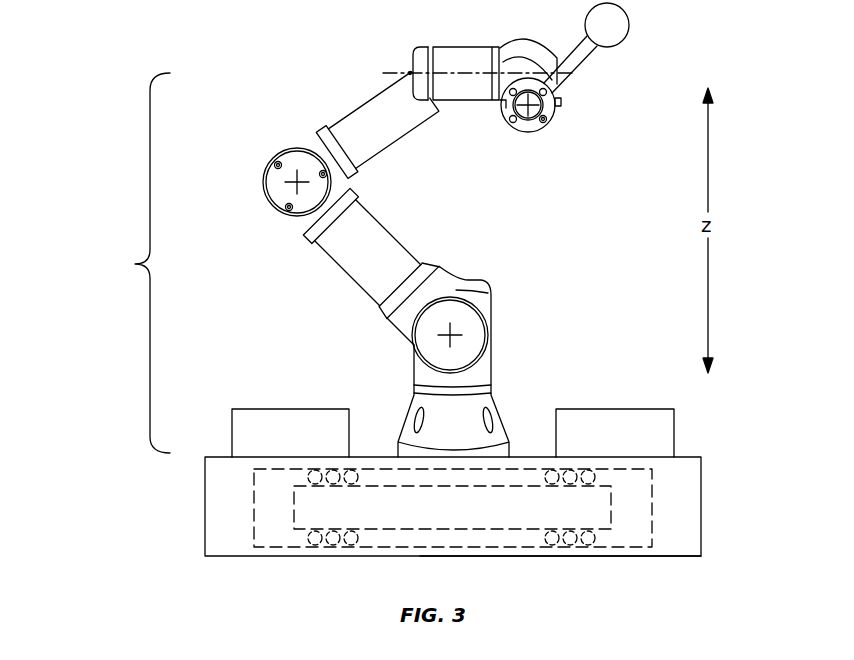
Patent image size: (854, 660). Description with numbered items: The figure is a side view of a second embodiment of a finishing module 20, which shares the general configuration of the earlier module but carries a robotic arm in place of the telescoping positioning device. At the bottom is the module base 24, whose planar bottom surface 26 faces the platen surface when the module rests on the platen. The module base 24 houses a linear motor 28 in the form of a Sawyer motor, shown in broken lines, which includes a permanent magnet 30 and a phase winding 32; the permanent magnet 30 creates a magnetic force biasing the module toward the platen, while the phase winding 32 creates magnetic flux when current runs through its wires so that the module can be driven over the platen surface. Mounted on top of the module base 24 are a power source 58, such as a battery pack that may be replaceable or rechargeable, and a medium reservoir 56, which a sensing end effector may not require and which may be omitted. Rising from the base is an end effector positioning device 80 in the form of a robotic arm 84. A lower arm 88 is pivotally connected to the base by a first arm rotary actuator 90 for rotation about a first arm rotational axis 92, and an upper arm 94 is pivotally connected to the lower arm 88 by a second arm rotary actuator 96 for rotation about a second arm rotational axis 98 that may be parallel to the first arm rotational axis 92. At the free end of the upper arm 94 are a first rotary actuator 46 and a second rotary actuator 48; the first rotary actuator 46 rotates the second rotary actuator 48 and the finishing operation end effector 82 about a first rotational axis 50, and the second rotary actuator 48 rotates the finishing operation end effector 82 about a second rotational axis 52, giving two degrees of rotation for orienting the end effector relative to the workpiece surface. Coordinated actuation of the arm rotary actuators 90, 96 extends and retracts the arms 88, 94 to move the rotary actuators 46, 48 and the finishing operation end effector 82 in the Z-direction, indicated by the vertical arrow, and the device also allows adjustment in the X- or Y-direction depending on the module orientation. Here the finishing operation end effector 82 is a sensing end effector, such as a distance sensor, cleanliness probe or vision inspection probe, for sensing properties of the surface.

The finishing module 20 is at (110, 86).
The module base 24 is at (205, 508).
The planar bottom surface 26 is at (581, 557).
The linear motor 28 is at (652, 497).
The permanent magnet 30 is at (611, 520).
The phase winding 32 is at (333, 545).
The first rotary actuator 46 is at (422, 50).
The second rotary actuator 48 is at (553, 108).
The first rotational axis 50 is at (408, 72).
The second rotational axis 52 is at (546, 120).
The medium reservoir 56 is at (615, 408).
The power source 58 is at (295, 408).
The end effector positioning device 80 is at (135, 264).
The finishing operation end effector 82 is at (607, 25).
The robotic arm 84 is at (508, 216).
The lower arm 88 is at (400, 238).
The first arm rotary actuator 90 is at (480, 322).
The first arm rotational axis 92 is at (447, 336).
The upper arm 94 is at (388, 130).
The second arm rotary actuator 96 is at (282, 152).
The second arm rotational axis 98 is at (290, 192).